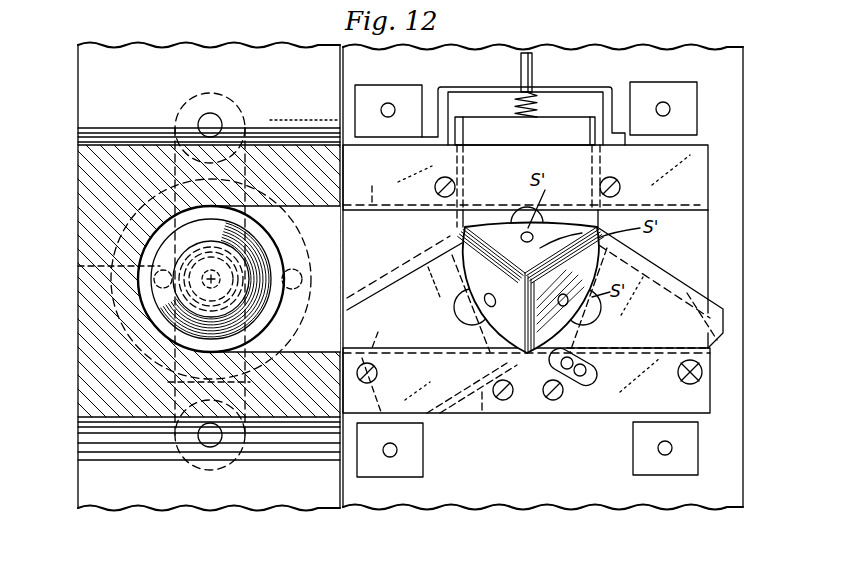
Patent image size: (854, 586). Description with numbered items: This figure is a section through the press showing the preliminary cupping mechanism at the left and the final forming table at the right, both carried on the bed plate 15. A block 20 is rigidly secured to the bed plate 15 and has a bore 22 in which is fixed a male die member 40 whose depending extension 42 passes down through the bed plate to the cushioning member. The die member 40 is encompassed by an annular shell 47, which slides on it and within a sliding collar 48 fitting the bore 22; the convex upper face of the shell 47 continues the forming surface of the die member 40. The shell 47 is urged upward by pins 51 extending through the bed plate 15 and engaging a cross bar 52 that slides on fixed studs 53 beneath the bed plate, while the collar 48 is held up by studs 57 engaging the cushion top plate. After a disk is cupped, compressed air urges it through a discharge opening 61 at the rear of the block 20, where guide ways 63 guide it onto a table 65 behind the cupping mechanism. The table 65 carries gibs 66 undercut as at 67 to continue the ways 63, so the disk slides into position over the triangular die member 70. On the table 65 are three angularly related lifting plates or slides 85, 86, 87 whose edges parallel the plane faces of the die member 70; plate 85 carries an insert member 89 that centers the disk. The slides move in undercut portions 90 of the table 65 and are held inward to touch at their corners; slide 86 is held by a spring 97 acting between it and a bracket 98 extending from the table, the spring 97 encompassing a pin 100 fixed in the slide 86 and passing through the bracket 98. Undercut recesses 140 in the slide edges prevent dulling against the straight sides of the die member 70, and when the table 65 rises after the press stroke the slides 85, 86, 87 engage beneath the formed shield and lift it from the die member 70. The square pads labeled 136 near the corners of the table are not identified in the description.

The bed plate 15 is at (378, 500).
The block 20 is at (83, 389).
The bore 22 is at (180, 303).
The male die member 40 is at (200, 280).
The depending extension 42 is at (216, 256).
The annular shell 47 is at (192, 236).
The sliding collar 48 is at (152, 250).
The pins 51 is at (292, 252).
The cross bar 52 is at (176, 472).
The fixed studs 53 is at (215, 118).
The studs 57 is at (110, 266).
The discharge opening 61 is at (323, 335).
The guide ways 63 is at (250, 335).
The table 65 is at (705, 233).
The gibs 66 is at (697, 176).
The undercut 67 is at (481, 278).
The triangular die member 70 is at (448, 265).
The lifting plate 85 is at (655, 287).
The slide 86 is at (568, 130).
The slide 87 is at (404, 273).
The insert member 89 is at (580, 380).
The undercut portions 90 is at (680, 283).
The spring 97 is at (542, 100).
The bracket 98 is at (475, 88).
The pin 100 is at (527, 53).
The mounting pad 136 is at (374, 98).
The undercut recesses 140 is at (522, 207).